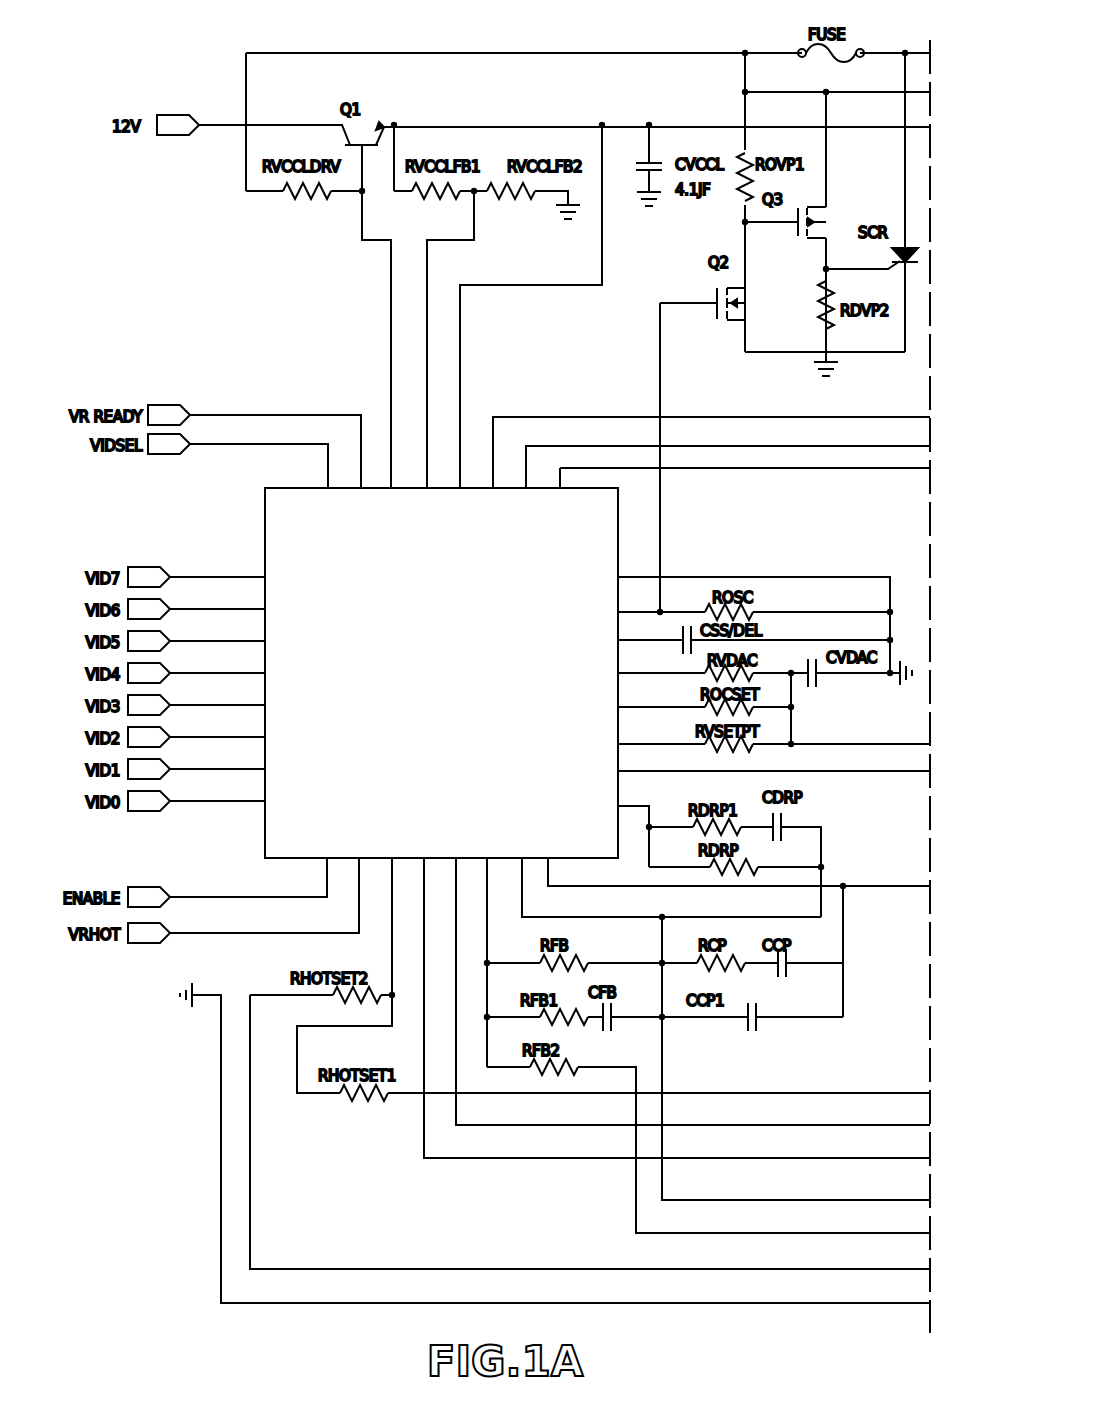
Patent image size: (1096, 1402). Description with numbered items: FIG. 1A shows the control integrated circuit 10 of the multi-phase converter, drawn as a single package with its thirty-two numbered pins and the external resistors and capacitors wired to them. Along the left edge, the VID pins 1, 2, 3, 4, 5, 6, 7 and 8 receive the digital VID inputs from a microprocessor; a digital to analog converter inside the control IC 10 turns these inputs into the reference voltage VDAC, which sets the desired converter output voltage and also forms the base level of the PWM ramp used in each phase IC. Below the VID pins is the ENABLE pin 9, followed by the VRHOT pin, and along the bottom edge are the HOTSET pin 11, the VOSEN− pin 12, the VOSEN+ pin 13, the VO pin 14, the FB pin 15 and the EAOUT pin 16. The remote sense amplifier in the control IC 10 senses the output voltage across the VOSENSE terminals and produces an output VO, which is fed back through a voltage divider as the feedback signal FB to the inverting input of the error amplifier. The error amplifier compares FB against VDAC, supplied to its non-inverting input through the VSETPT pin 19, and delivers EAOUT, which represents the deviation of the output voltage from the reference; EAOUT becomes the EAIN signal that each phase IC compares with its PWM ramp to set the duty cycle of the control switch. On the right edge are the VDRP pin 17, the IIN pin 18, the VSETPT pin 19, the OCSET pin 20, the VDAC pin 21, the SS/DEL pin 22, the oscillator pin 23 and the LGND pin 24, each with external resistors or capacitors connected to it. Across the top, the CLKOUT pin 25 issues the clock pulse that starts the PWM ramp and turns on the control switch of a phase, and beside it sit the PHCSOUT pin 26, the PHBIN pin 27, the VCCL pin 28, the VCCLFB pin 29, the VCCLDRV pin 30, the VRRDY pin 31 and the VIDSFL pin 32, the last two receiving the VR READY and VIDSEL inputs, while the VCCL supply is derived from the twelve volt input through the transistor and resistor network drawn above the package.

The control integrated circuit 10 is at (265, 838).
The switch node 1 is at (273, 572).
The switch node 2 is at (273, 604).
The switch node 3 is at (273, 636).
The switch node 4 is at (273, 668).
The switch node 5 is at (273, 700).
The switch node 6 is at (273, 732).
The VID1 pin 7 is at (273, 764).
The VID0 pin 8 is at (273, 796).
The ENABLE pin 9 is at (324, 837).
The HOTSET pin 11 is at (384, 836).
The VOSEN- pin 12 is at (416, 838).
The VOSEN+ pin 13 is at (448, 834).
The VO pin 14 is at (479, 855).
The FB pin 15 is at (514, 857).
The EAOUT pin 16 is at (541, 840).
The VDRP pin 17 is at (608, 800).
The IIN pin 18 is at (619, 765).
The VSETPT pin 19 is at (601, 738).
The error amplifier 20 is at (604, 701).
The VDAC pin 21 is at (608, 667).
The SS/DEL pin 22 is at (602, 635).
The ROSC/OVP pin 23 is at (590, 606).
The LGND pin 24 is at (607, 571).
The CLKOUT pin 25 is at (551, 509).
The PHCSOUT pin 26 is at (519, 515).
The PHBIN pin 27 is at (485, 502).
The VCCL pin 28 is at (452, 499).
The VCCLFB pin 29 is at (419, 508).
The phase IC 30 is at (384, 514).
The VRRDY pin 31 is at (353, 505).
The remote sense amplifier 32 is at (320, 505).